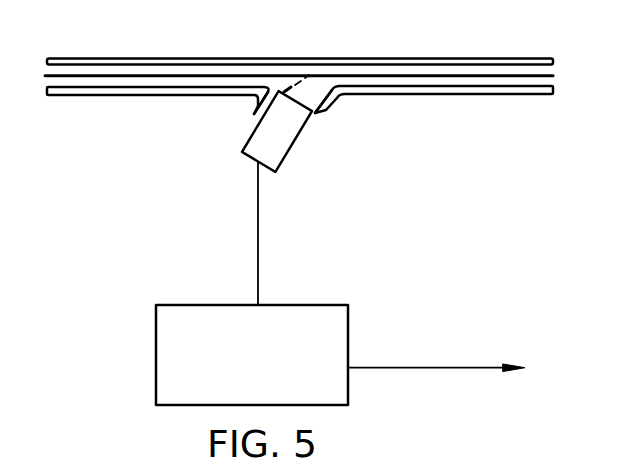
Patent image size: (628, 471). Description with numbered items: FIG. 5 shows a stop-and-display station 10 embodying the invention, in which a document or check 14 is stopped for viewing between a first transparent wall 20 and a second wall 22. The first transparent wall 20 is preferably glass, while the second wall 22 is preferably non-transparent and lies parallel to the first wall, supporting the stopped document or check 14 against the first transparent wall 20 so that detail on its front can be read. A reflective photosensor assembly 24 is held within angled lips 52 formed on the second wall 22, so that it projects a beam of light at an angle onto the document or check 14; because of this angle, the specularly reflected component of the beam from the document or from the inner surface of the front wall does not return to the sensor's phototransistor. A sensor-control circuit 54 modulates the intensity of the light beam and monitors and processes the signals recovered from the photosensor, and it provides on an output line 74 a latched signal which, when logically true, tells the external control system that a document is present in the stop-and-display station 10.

The stop-and-display station 10 is at (37, 43).
The document or check 14 is at (557, 76).
The first transparent wall 20 is at (425, 56).
The second wall 22 is at (100, 94).
The reflective photosensor assembly 24 is at (287, 147).
The angled lips 52 is at (258, 112).
The sensor-control circuit 54 is at (156, 354).
The output line 74 is at (448, 366).